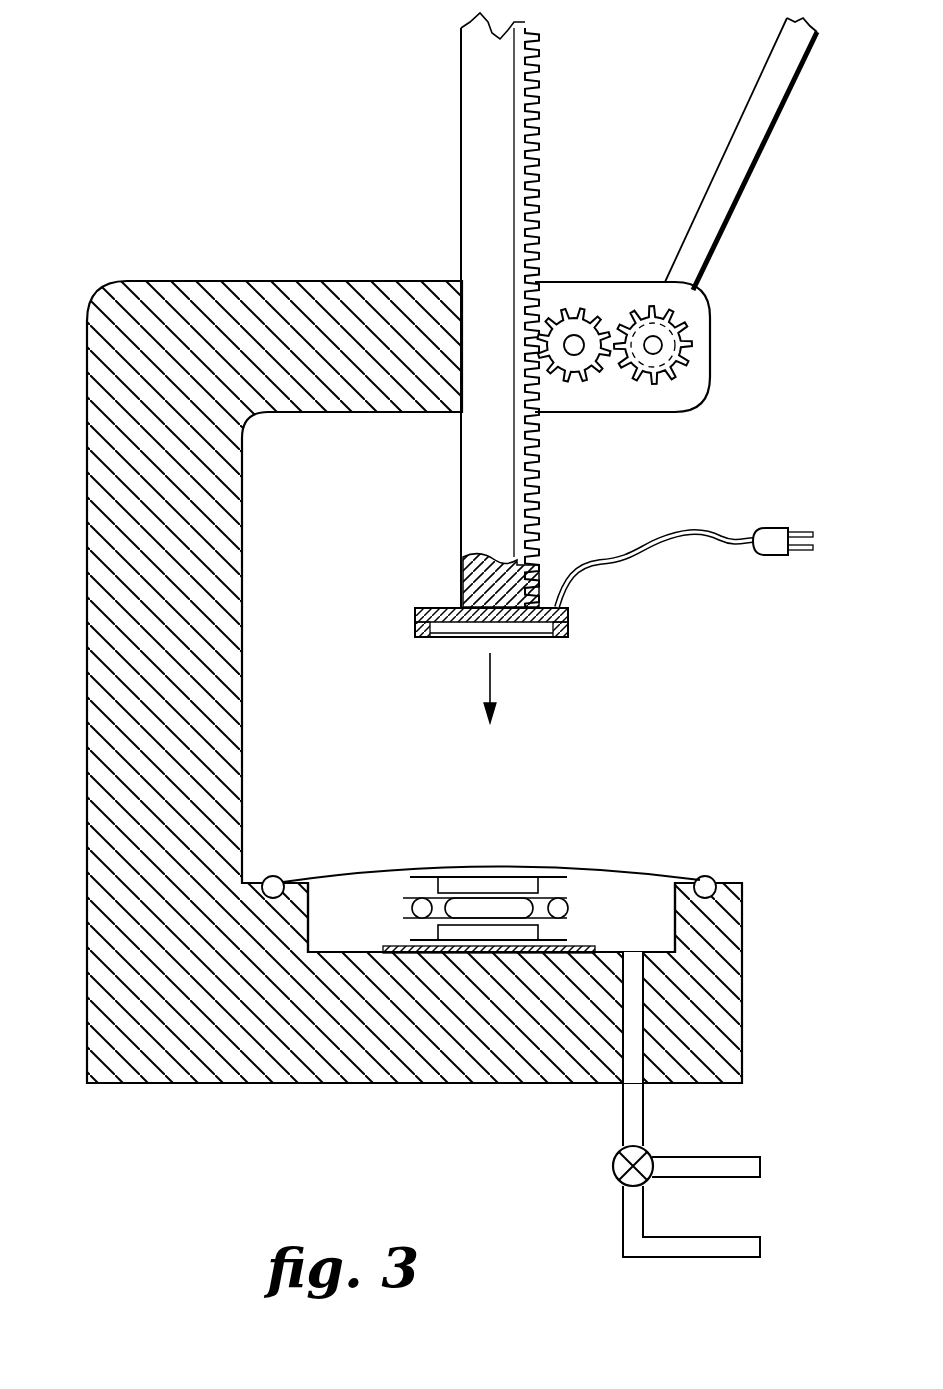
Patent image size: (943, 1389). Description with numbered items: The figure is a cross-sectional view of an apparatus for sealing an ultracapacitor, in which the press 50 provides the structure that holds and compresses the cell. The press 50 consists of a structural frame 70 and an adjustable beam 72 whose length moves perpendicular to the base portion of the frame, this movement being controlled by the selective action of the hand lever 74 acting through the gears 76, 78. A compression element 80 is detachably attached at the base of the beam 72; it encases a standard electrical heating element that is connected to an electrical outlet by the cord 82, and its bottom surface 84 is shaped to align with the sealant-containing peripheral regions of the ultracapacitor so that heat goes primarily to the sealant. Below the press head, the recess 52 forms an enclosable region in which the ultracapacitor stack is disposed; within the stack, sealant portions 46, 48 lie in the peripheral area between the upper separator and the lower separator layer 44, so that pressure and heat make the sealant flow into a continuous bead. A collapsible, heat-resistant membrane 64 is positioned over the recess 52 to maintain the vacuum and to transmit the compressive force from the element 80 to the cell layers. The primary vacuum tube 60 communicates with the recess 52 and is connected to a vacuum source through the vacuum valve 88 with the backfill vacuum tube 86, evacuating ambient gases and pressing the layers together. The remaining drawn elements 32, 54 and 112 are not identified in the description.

The press 50 is at (210, 213).
The structural frame 70 is at (242, 531).
The adjustable beam 72 is at (462, 160).
The hand lever 74 is at (762, 72).
The gear 76 is at (578, 312).
The gear 78 is at (700, 342).
The compression element 80 is at (570, 612).
The bottom surface 84 is at (560, 640).
The cord 82 is at (725, 530).
The recess 52 is at (668, 893).
The collapsible membrane 64 is at (358, 870).
The sealant portion 46 is at (410, 903).
The electrochemical cell 32 is at (562, 888).
The lower separator layer 44 is at (412, 910).
The sealant portion 48 is at (566, 910).
The fluid chamber 54 is at (600, 897).
The bottom plate 112 is at (395, 950).
The primary vacuum tube 60 is at (745, 1258).
The backfill vacuum tube 86 is at (730, 1157).
The vacuum valve 88 is at (612, 1166).